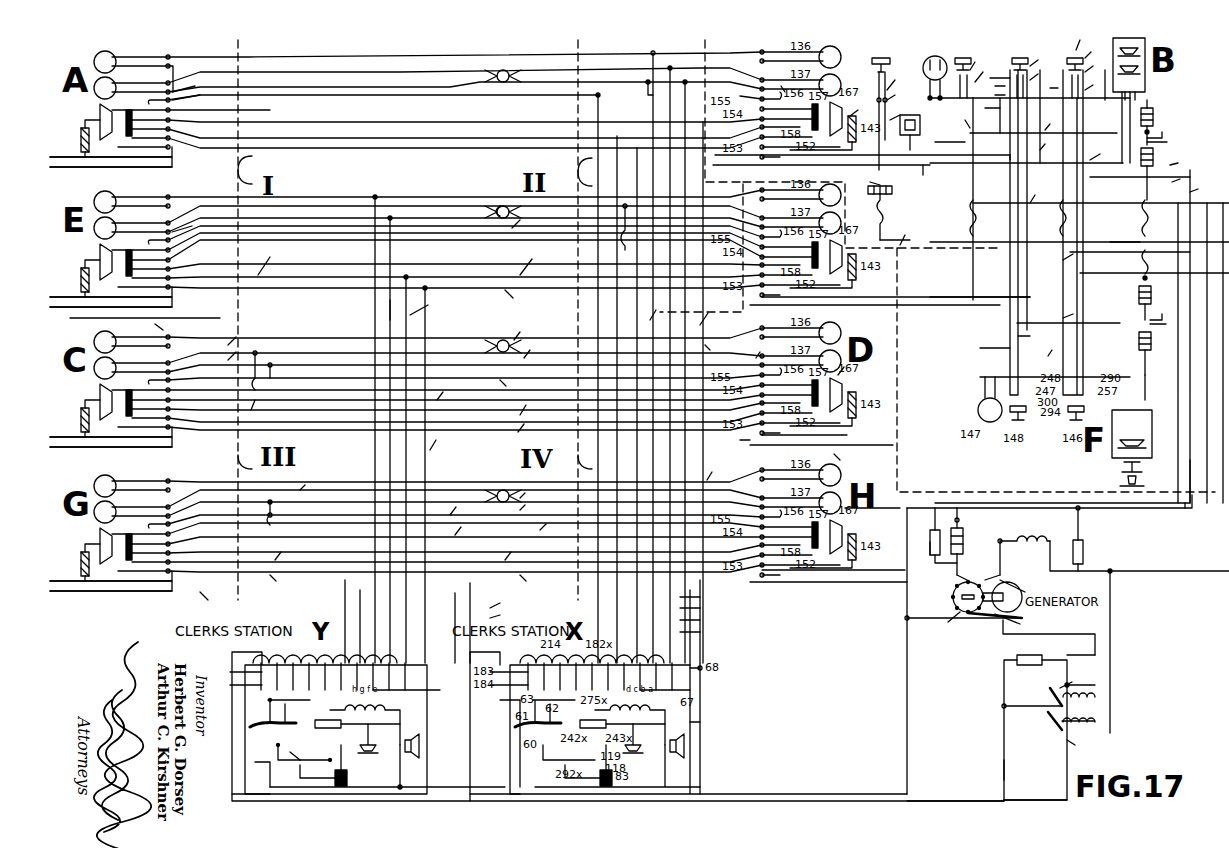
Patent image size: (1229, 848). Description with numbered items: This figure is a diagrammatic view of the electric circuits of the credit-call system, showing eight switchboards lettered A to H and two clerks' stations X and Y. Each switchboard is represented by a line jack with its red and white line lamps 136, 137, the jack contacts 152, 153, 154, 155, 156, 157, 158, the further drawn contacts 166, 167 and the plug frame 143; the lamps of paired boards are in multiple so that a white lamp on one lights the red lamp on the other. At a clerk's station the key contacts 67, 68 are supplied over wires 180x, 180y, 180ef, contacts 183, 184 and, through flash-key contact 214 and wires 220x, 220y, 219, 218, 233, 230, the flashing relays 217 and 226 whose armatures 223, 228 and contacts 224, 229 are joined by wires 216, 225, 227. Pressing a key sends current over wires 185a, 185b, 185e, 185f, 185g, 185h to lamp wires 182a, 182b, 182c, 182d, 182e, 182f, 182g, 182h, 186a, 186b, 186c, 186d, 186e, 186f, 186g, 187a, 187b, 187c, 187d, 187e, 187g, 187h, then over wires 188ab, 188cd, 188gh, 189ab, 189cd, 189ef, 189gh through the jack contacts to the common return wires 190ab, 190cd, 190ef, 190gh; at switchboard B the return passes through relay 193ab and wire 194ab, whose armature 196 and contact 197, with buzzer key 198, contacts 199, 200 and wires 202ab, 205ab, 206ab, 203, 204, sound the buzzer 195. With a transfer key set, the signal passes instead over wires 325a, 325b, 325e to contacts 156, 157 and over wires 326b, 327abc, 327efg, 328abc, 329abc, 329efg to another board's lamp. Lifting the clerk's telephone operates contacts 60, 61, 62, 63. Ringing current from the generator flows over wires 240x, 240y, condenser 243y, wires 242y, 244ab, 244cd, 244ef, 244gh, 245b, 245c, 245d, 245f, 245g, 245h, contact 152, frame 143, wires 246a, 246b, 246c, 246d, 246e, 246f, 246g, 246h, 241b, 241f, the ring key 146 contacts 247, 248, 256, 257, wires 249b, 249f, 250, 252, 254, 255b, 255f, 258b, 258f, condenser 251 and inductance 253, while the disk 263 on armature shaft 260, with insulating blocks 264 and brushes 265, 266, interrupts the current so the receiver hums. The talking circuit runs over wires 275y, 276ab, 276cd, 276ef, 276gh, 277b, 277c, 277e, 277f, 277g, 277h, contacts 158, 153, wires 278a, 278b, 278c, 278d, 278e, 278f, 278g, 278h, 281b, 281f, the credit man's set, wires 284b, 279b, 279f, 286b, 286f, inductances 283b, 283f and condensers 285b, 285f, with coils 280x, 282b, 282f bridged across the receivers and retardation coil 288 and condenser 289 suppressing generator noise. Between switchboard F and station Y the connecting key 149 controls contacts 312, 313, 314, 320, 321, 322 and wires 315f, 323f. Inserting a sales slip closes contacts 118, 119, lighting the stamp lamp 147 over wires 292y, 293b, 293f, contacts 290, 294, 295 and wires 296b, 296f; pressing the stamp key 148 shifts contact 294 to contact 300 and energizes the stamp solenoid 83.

The lamp 136 is at (112, 58).
The lamp 137 is at (112, 84).
The resistance 143 is at (97, 139).
The contact 152 is at (144, 152).
The contact 153 is at (151, 136).
The contact 154 is at (169, 121).
The contact 155 is at (141, 107).
The contact 156 is at (143, 100).
The key lever 157 is at (100, 108).
The key bar 158 is at (124, 118).
The contact 166 is at (780, 87).
The contact 167 is at (842, 368).
The conductor 187a is at (255, 70).
The conductor 186a is at (360, 72).
The conductor 187b is at (520, 68).
The conductor 182a is at (595, 70).
The conductor 186b is at (660, 65).
The conductor 182b is at (715, 70).
The conductor 325a is at (196, 88).
The conductor 188ab is at (262, 108).
The conductor 189ab is at (515, 128).
The conductor 326b is at (629, 94).
The conductor 277b is at (687, 364).
The conductor 327abc is at (641, 371).
The conductor 245b is at (861, 147).
The conductor 325b is at (735, 91).
The conductor 206ab is at (852, 109).
The conductor 246a is at (102, 168).
The conductor 278a is at (155, 168).
The conductor 182e is at (290, 205).
The conductor 186e is at (350, 206).
The conductor 187e is at (506, 199).
The conductor 186f is at (533, 219).
The conductor 182f is at (410, 223).
The conductor 189ef is at (450, 263).
The conductor 277f is at (542, 259).
The conductor 180ef is at (621, 233).
The conductor 276ef is at (436, 305).
The conductor 245f is at (523, 296).
The conductor 327efg is at (357, 310).
The conductor 276ab is at (630, 311).
The conductor 190ab is at (222, 306).
The conductor 246e is at (130, 297).
The conductor 278e is at (130, 310).
The conductor 277e is at (278, 261).
The conductor 325e is at (196, 230).
The conductor 190ef is at (178, 330).
The conductor 244ab is at (720, 319).
The conductor 246f is at (919, 301).
The conductor 278f is at (925, 305).
The conductor 187c is at (220, 341).
The conductor 186c is at (397, 337).
The conductor 182c is at (530, 329).
The conductor 187d is at (542, 346).
The conductor 329abc is at (277, 372).
The conductor 188cd is at (271, 409).
The conductor 328abc is at (521, 386).
The conductor 189cd is at (455, 394).
The conductor 277c is at (537, 403).
The conductor 245c is at (535, 425).
The conductor 244ef is at (449, 441).
The conductor 182d is at (722, 343).
The conductor 186d is at (772, 354).
The conductor 246c is at (144, 445).
The conductor 278c is at (177, 445).
The conductor 245d is at (735, 436).
The conductor 246d is at (848, 432).
The conductor 278d is at (893, 443).
The conductor 190cd is at (856, 462).
The conductor 182g is at (290, 486).
The conductor 187g is at (539, 487).
The conductor 186g is at (539, 500).
The conductor 187h is at (723, 469).
The conductor 329efg is at (287, 512).
The conductor 182h is at (466, 508).
The conductor 189gh is at (475, 528).
The conductor 188gh is at (555, 522).
The conductor 277g is at (291, 551).
The conductor 277h is at (519, 551).
The conductor 245g is at (288, 576).
The conductor 245h is at (534, 576).
The conductor 246g is at (130, 588).
The conductor 278g is at (105, 590).
The conductor 190gh is at (217, 603).
The conductor 246h is at (860, 570).
The conductor 278h is at (855, 582).
The conductor 185h is at (343, 585).
The conductor 185g is at (343, 595).
The conductor 185f is at (470, 580).
The conductor 185e is at (468, 590).
The conductor 244gh is at (481, 602).
The conductor 276gh is at (481, 614).
The conductor 185a is at (706, 596).
The conductor 185b is at (706, 607).
The conductor 276cd is at (709, 619).
The conductor 244cd is at (709, 631).
The selector coil 214 is at (274, 660).
The selector contacts 68 is at (331, 662).
The conductor 67 is at (413, 679).
The conductor 183 is at (228, 671).
The conductor 184 is at (228, 684).
The conductor 63 is at (280, 708).
The conductor 62 is at (285, 712).
The coil 275y is at (358, 719).
The resistance 242y is at (350, 718).
The switch 61 is at (270, 718).
The telephone receiver 243y is at (351, 738).
The conductor 119 is at (300, 747).
The conductor 60 is at (274, 749).
The conductor 118 is at (325, 760).
The conductor 180y is at (252, 769).
The conductor 292y is at (310, 773).
The resistance 83 is at (349, 765).
The conductor 220y is at (251, 781).
The conductor 240y is at (387, 767).
The conductor 180x is at (494, 739).
The conductor 220x is at (494, 750).
The conductor 240x is at (634, 768).
The conductor 280x is at (711, 722).
The key 198 is at (876, 104).
The conductor 200 is at (900, 79).
The conductor 199 is at (900, 94).
The conductor 205ab is at (902, 112).
The relay 195 is at (921, 128).
The lamp 147 is at (928, 52).
The key 148 is at (959, 68).
The conductor 294 is at (983, 55).
The conductor 300 is at (989, 69).
The conductor 312 is at (996, 74).
The conductor 321 is at (992, 85).
The conductor 320 is at (992, 95).
The conductor 322 is at (987, 106).
The key 149 is at (1016, 68).
The conductor 313 is at (1043, 57).
The conductor 314 is at (1043, 72).
The conductor 257 is at (1050, 88).
The key 256 is at (1064, 69).
The key 146 is at (1085, 38).
The conductor 290 is at (1097, 49).
The conductor 247 is at (1098, 66).
The conductor 248 is at (1098, 84).
The resistance 282b is at (1166, 106).
The contact 284b is at (1152, 132).
The armature 285b is at (1173, 135).
The relay coil 283b is at (1158, 158).
The conductor 286b is at (1185, 162).
The conductor 249b is at (1190, 176).
The conductor 255b is at (1204, 189).
The conductor 281b is at (1140, 174).
The conductor 241b is at (1107, 151).
The conductor 315f is at (1052, 145).
The conductor 293b is at (1054, 122).
The conductor 323f is at (947, 146).
The conductor 295 is at (972, 237).
The relay coil 296b is at (953, 180).
The conductor 278b is at (932, 173).
The conductor 246b is at (952, 150).
The conductor 202ab is at (1047, 191).
The conductor 197 is at (869, 178).
The coil 196 is at (905, 192).
The relay coil 193ab is at (900, 217).
The conductor 194ab is at (905, 237).
The relay coil 258b is at (1079, 218).
The relay coil 279b is at (1124, 218).
The conductor 286f is at (1120, 235).
The relay coil 279f is at (1124, 262).
The conductor 255f is at (1123, 276).
The relay coil 283f is at (1125, 295).
The conductor 258f is at (1122, 312).
The armature 285f is at (1165, 327).
The resistance 282f is at (1160, 353).
The conductor 249f is at (1052, 267).
The conductor 281f is at (1052, 314).
The conductor 241f is at (1007, 334).
The conductor 293f is at (1048, 351).
The conductor 296f is at (975, 348).
The relay 250 is at (1170, 412).
The conductor 254 is at (1168, 472).
The conductor 204 is at (1175, 514).
The conductor 203 is at (907, 618).
The resistance 252 is at (963, 557).
The resistance 253 is at (963, 536).
The conductor 251 is at (940, 570).
The brush 265 is at (940, 585).
The brush 260 is at (984, 576).
The commutator 263 is at (953, 601).
The brush 264 is at (980, 620).
The brush 266 is at (938, 624).
The coil 288 is at (1035, 533).
The resistance 289 is at (1083, 550).
The conductor 227 is at (1110, 620).
The conductor 216 is at (1095, 645).
The conductor 230 is at (998, 710).
The contact 225 is at (1095, 685).
The relay coil 226 is at (1095, 697).
The relay coil 224 is at (1095, 716).
The armature 229 is at (1048, 681).
The armature 228 is at (1036, 697).
The armature 223 is at (1036, 723).
The conductor 217 is at (1091, 746).
The conductor 233 is at (1004, 770).
The conductor 219 is at (940, 800).
The conductor 218 is at (1018, 800).